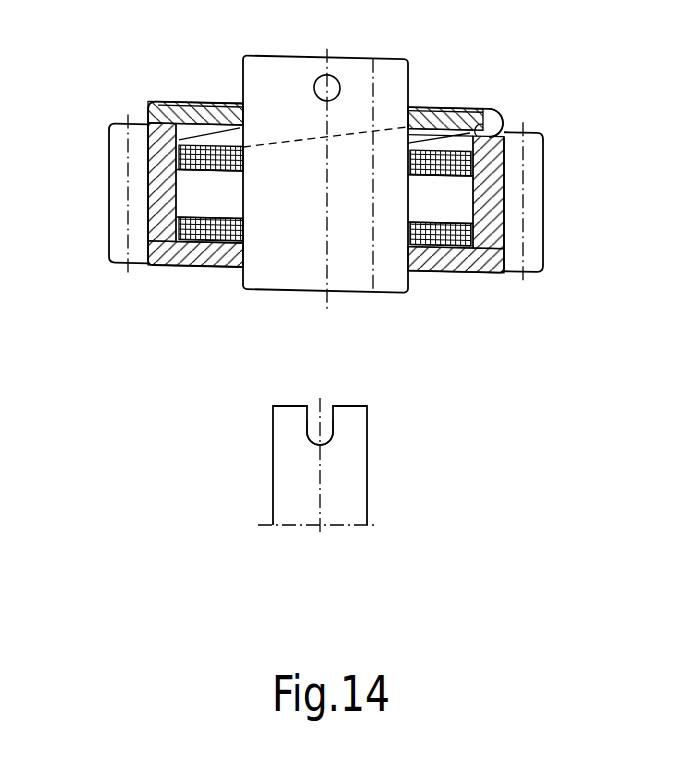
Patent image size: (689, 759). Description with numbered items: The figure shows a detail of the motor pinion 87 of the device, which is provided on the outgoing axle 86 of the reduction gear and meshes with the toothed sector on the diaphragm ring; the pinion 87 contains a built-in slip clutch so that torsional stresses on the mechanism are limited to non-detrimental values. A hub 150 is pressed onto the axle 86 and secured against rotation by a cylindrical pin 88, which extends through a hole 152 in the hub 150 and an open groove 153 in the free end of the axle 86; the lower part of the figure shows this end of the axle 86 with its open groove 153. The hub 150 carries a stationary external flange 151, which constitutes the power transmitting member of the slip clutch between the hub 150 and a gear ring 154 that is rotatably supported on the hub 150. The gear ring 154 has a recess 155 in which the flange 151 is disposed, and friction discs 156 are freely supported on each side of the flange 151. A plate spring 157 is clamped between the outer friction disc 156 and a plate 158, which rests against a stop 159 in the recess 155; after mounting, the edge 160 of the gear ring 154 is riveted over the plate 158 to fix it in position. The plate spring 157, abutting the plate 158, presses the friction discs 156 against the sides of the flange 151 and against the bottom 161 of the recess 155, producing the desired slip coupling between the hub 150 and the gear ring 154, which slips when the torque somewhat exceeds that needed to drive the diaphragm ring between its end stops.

The outgoing axle 86 is at (350, 488).
The pinion 87 is at (318, 495).
The cylindrical pin 88 is at (318, 80).
The hub 150 is at (397, 67).
The external flange 151 is at (218, 207).
The hole 152 is at (337, 74).
The open groove 153 is at (325, 428).
The gear ring 154 is at (495, 240).
The recess 155 is at (465, 148).
The friction discs 156 is at (192, 157).
The plate spring 157 is at (440, 130).
The plate 158 is at (210, 110).
The stop 159 is at (495, 136).
The edge of the gear ring 160 is at (493, 125).
The bottom of the recess 161 is at (432, 248).